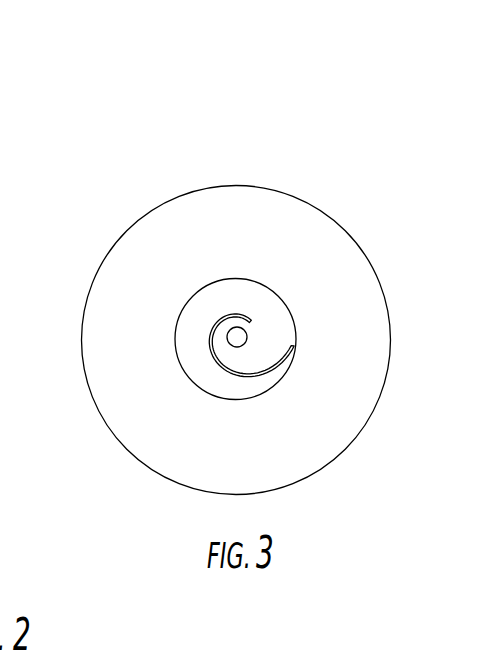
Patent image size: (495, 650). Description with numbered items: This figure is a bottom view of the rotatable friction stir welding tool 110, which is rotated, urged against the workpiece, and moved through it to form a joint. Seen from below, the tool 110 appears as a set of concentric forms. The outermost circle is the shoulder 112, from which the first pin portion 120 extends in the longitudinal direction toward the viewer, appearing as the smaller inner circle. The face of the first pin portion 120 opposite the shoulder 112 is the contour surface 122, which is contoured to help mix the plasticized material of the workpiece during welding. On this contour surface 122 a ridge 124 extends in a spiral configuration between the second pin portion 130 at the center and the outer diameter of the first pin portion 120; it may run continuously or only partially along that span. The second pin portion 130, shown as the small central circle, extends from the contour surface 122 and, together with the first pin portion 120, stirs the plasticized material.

The friction stir welding tool 110 is at (246, 120).
The shoulder 112 is at (166, 228).
The first pin portion 120 is at (295, 332).
The contour surface 122 is at (245, 290).
The ridge 124 is at (249, 325).
The second pin portion 130 is at (227, 335).